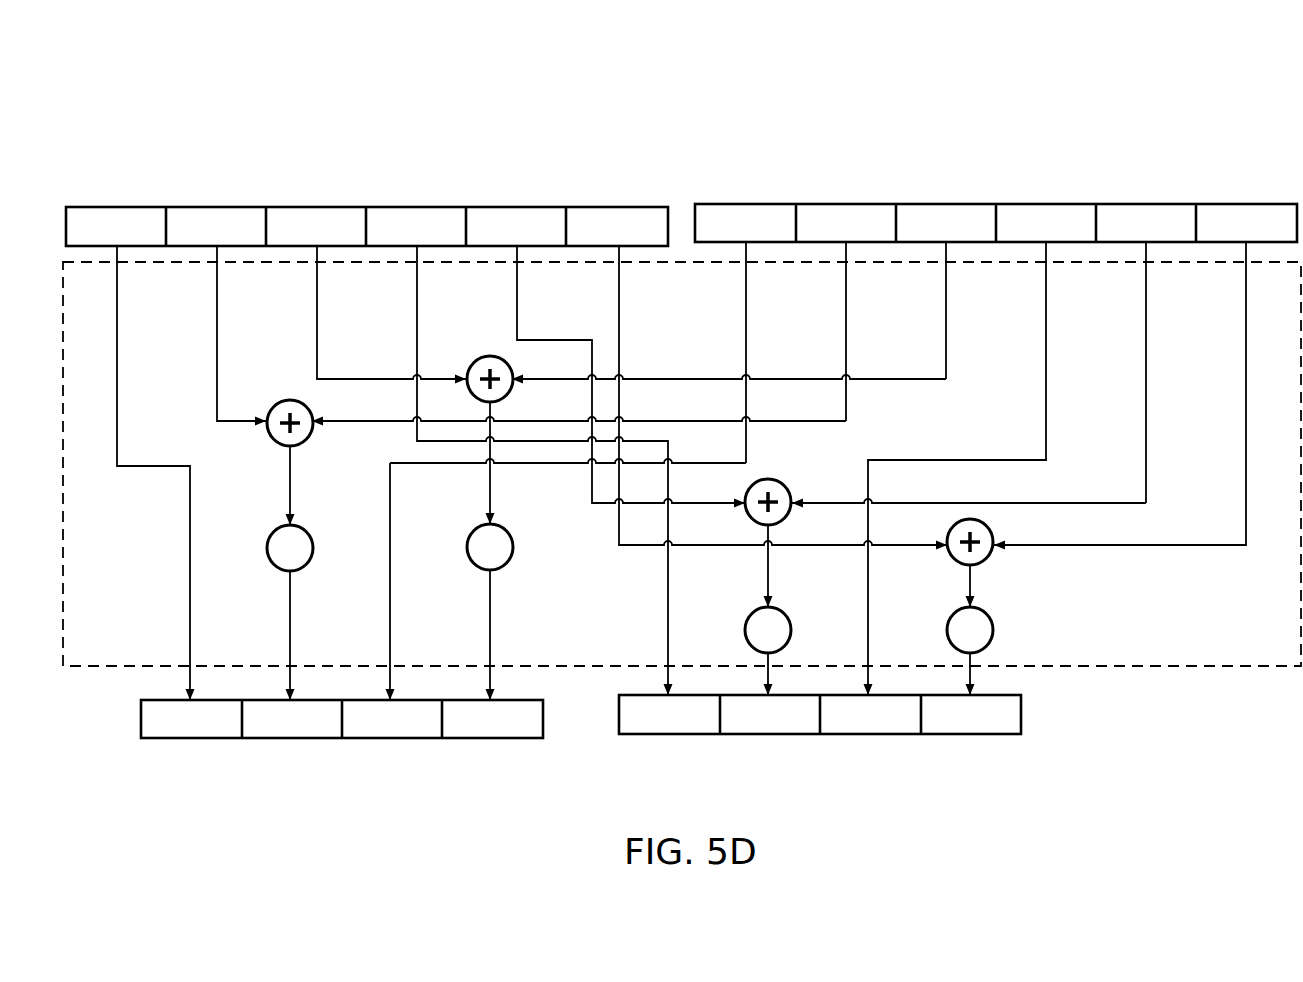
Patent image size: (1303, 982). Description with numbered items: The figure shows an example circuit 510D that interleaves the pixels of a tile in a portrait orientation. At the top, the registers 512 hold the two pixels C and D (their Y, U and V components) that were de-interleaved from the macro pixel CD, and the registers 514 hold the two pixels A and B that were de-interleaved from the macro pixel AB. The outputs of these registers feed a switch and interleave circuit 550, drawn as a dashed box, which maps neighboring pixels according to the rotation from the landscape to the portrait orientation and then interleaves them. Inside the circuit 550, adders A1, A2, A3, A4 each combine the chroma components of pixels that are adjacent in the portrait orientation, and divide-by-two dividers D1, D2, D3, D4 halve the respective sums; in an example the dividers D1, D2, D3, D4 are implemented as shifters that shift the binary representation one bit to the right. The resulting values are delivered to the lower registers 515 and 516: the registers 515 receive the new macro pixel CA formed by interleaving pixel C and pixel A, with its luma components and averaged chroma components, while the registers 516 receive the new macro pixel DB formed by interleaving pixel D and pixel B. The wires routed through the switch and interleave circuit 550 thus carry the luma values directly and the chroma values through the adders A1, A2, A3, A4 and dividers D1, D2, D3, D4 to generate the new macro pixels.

The circuit 510D is at (857, 105).
The registers 512 is at (512, 197).
The registers 514 is at (1119, 191).
The first output pixel data (Yc Uca Ya Vca) 515 is at (211, 751).
The second output pixel data (Yd Udb Yb Vdb) 516 is at (906, 743).
The switch and interleave circuit 550 is at (1280, 651).
The adder A1 is at (284, 401).
The adder A2 is at (482, 359).
The adder A3 is at (777, 482).
The adder A4 is at (988, 530).
The divide-by-2 divider D1 is at (311, 533).
The divide-by-2 divider D2 is at (511, 532).
The divide-by-2 divider D3 is at (788, 615).
The divide-by-2 divider D4 is at (990, 615).